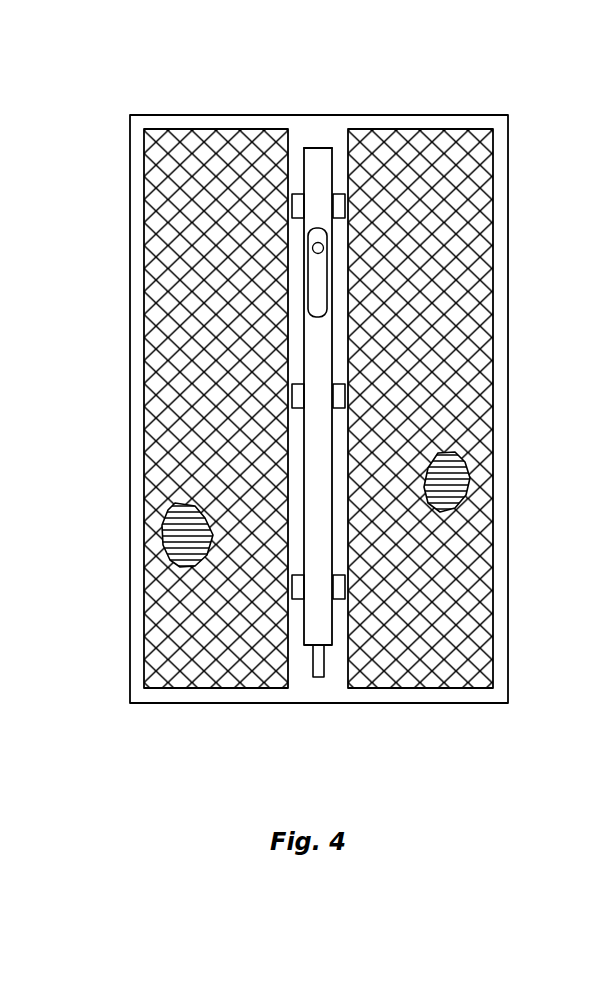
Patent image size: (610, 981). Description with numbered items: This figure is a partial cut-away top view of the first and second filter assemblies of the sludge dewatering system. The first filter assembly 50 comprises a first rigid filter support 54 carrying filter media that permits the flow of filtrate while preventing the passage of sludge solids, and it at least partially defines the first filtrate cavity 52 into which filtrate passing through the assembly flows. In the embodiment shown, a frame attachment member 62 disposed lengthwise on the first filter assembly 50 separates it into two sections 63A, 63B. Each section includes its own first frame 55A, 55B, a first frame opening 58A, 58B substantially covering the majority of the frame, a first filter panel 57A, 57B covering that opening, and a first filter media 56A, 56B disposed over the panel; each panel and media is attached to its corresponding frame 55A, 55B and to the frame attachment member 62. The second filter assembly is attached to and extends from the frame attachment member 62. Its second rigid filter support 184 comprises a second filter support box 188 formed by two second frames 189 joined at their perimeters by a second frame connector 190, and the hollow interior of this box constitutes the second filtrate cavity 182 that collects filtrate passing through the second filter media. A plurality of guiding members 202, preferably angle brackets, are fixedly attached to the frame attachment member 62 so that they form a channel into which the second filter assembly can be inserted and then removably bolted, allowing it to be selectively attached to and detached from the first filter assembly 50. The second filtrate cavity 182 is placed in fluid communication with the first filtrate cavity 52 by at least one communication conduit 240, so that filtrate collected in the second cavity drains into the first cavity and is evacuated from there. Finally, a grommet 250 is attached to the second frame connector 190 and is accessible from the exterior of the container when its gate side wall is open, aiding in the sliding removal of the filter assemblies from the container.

The first filter assembly 50 is at (168, 710).
The first rigid filter support 54 is at (445, 712).
The first filtrate cavity 52 is at (324, 256).
The first frame 55A is at (146, 660).
The first frame 55B is at (492, 655).
The first filter media 56A is at (165, 471).
The first filter media 56B is at (485, 393).
The first filter panel 57A is at (172, 533).
The first filter panel 57B is at (465, 479).
The first frame opening 58A is at (160, 593).
The first frame opening 58B is at (478, 547).
The frame attachment member 62 is at (295, 685).
The first section of first filter assembly 63A is at (222, 716).
The second section of first filter assembly 63B is at (413, 716).
The second filtrate cavity 182 is at (321, 294).
The second rigid filter support 184 is at (323, 99).
The second filter support box 188 is at (322, 152).
The second frames 189 is at (297, 192).
The second frame connector 190 is at (314, 176).
The guiding members 202 is at (297, 193).
The communication conduit 240 is at (323, 245).
The grommet 250 is at (325, 668).